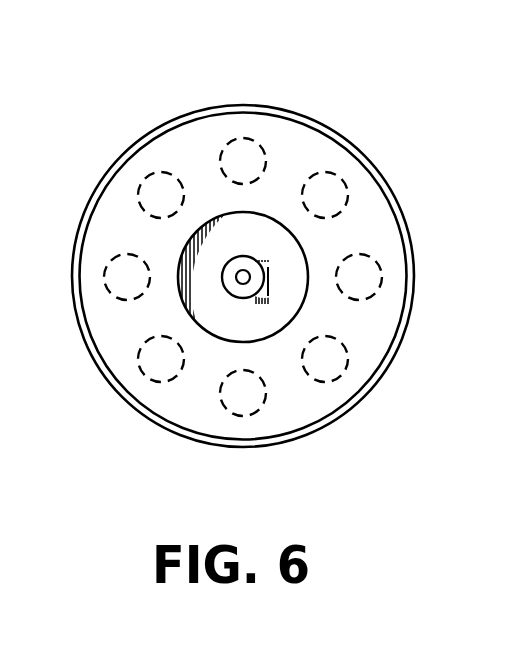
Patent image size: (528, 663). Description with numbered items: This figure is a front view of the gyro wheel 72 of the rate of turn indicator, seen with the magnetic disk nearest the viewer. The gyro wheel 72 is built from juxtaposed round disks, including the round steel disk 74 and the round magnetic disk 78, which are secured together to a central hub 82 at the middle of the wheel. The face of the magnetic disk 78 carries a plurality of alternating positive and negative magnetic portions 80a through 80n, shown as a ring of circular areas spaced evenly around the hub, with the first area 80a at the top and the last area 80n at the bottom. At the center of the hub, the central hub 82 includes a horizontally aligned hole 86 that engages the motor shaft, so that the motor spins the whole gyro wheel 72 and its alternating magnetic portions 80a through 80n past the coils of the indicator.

The gyro wheel 72 is at (334, 78).
The round steel disk 74 is at (266, 276).
The round magnetic disk 78 is at (247, 282).
The magnetic area 80a is at (306, 235).
The magnetic area 80n is at (241, 323).
The central hub 82 is at (322, 266).
The horizontally aligned hole 86 is at (139, 342).